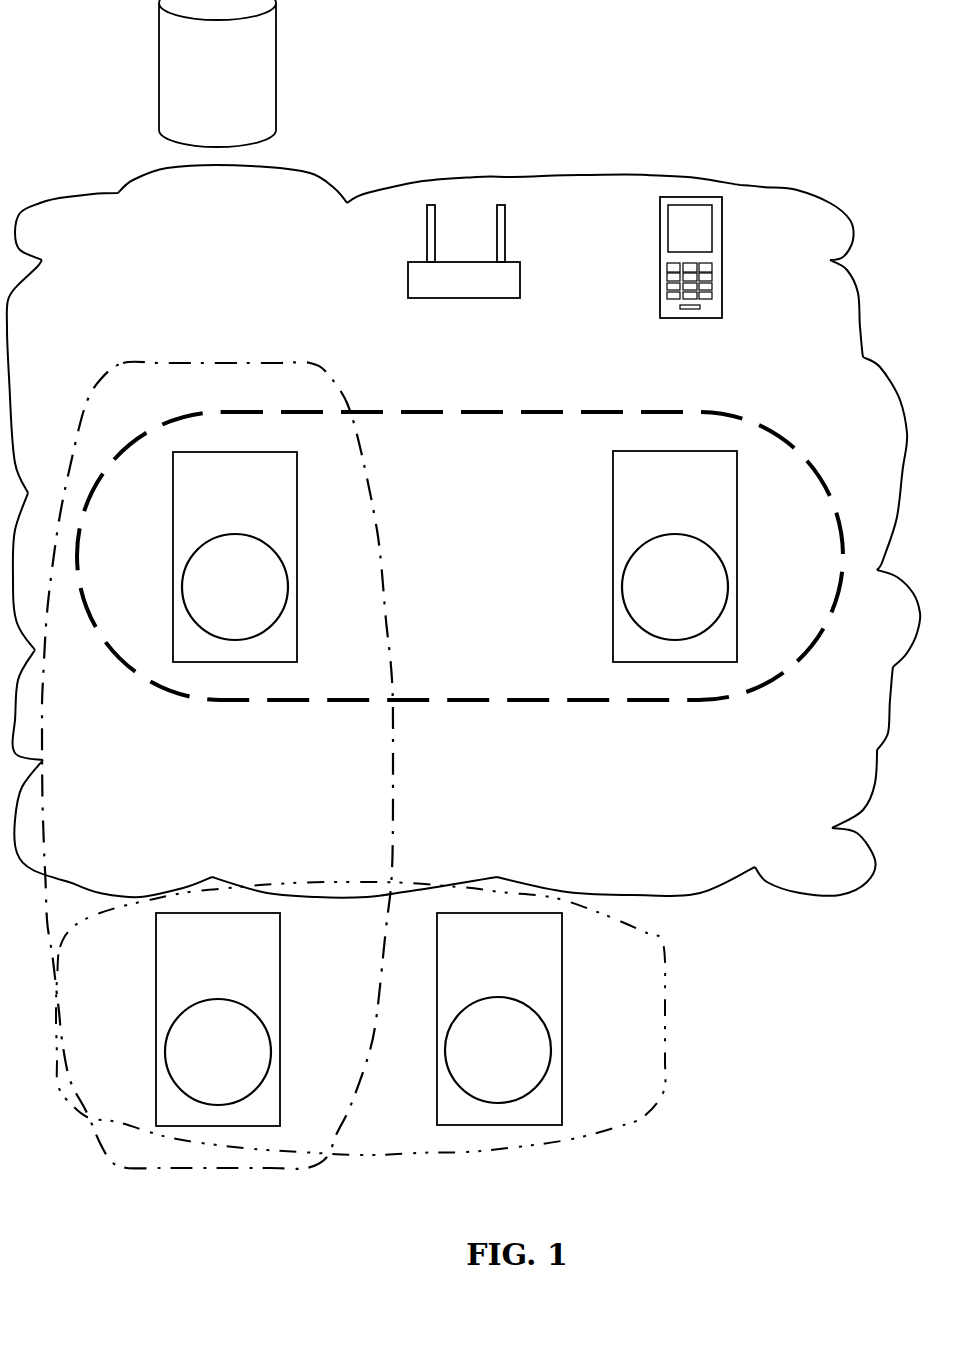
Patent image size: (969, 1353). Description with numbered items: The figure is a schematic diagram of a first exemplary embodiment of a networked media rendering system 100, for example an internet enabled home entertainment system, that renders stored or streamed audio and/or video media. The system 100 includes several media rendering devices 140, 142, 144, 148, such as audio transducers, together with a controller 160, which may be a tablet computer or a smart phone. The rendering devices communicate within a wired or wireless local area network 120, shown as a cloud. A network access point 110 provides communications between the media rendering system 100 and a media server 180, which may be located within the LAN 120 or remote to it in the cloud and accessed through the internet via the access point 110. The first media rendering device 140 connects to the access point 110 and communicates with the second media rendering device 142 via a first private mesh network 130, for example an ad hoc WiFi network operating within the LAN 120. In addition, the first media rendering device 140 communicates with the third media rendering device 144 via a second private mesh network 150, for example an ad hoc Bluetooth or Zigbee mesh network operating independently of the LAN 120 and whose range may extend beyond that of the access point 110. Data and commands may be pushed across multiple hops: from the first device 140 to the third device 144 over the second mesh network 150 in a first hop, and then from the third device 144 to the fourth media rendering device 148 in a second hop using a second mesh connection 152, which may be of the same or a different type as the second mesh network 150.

The media rendering system 100 is at (718, 1007).
The network access point 110 is at (464, 251).
The local area network 120 is at (77, 228).
The first private mesh network 130 is at (752, 693).
The first media rendering device 140 is at (214, 481).
The second media rendering device 142 is at (654, 481).
The third media rendering device 144 is at (197, 946).
The fourth media rendering device 148 is at (477, 945).
The second private mesh network 150 is at (217, 1168).
The second mesh connection 152 is at (633, 1122).
The controller 160 is at (665, 310).
The media server 180 is at (198, 88).